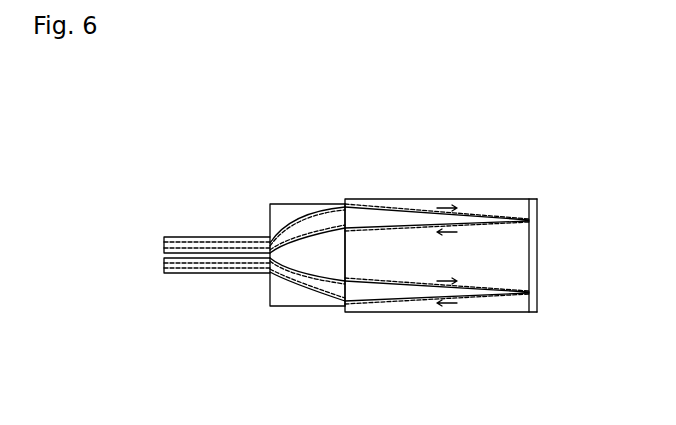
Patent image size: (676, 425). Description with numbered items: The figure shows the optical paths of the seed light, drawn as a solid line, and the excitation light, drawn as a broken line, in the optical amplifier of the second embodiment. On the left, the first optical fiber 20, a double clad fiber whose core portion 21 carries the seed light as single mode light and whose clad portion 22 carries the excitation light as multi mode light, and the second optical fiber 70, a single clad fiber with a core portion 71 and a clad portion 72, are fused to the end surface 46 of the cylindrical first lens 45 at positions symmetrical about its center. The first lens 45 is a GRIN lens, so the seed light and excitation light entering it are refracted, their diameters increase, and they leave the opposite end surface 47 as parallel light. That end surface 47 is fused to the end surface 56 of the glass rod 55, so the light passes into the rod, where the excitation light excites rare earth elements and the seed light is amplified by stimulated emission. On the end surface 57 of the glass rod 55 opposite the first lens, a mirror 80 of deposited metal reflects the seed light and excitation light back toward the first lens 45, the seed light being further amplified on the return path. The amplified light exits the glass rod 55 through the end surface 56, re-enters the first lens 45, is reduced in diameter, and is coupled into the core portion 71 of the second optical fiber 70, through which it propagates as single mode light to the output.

The first optical fiber 20 is at (180, 237).
The core portion 21 is at (222, 237).
The clad portion 22 is at (255, 237).
The second optical fiber 70 is at (177, 273).
The core portion 71 is at (208, 265).
The clad portion 72 is at (240, 272).
The first lens 45 is at (292, 298).
The end surface 46 is at (270, 279).
The end surface 47 is at (345, 249).
The glass rod 55 is at (470, 208).
The end surface 56 is at (342, 237).
The end surface 57 is at (535, 285).
The mirror 80 is at (533, 233).